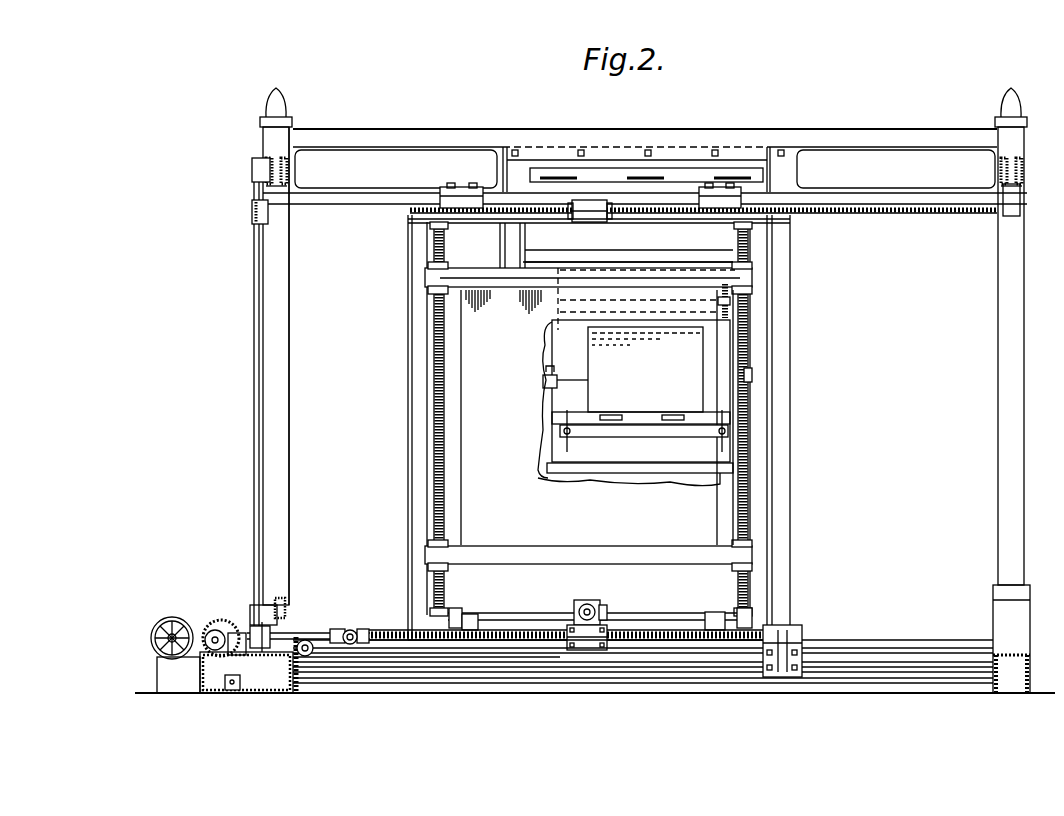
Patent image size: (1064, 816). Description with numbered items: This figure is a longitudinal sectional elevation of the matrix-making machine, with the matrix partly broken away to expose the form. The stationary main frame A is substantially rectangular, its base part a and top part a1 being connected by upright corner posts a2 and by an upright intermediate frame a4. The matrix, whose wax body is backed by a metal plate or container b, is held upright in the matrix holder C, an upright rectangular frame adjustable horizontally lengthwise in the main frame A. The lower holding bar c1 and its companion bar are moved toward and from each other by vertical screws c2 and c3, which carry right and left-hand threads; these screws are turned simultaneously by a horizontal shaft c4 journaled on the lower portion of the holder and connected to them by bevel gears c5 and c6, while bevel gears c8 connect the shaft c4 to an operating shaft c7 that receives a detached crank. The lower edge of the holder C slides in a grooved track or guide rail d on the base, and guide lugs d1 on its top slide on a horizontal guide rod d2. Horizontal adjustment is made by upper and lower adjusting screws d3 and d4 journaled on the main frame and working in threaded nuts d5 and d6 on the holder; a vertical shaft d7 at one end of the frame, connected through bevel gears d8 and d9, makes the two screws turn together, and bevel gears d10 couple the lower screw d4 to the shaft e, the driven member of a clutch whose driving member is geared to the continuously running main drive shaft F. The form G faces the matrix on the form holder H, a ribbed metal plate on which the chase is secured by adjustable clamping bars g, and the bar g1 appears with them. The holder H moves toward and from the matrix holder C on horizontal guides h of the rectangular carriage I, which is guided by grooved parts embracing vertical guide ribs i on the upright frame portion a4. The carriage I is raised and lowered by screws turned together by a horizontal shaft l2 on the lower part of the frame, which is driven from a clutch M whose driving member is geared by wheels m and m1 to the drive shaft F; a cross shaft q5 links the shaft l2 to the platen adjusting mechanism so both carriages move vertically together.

The top part a1 is at (900, 137).
The upright corner posts a2 is at (280, 338).
The upright intermediate rear frame a4 is at (507, 247).
The base part a is at (912, 677).
The stationary main frame A is at (283, 433).
The matrix holder C is at (408, 439).
The lower adjustable holding bar c1 is at (646, 560).
The vertical screw c2 is at (441, 401).
The vertical screw c3 is at (740, 600).
The horizontal shaft c4 is at (545, 603).
The bevel gears c5 is at (462, 616).
The bevel gears c6 is at (453, 608).
The operating shaft c7 is at (597, 612).
The bevel gears c8 is at (586, 605).
The grooved track or guide rail d is at (722, 665).
The guide lugs d1 is at (466, 197).
The horizontal guide rod d2 is at (896, 201).
The upper horizontal adjusting screw d3 is at (351, 208).
The lower horizontal adjusting screw d4 is at (397, 620).
The threaded nut d5 is at (591, 222).
The threaded nut d6 is at (589, 652).
The vertical shaft d7 is at (253, 436).
The bevel gears d8 is at (253, 219).
The bevel gears d9 is at (254, 650).
The bevel gears d10 is at (236, 633).
The clutch shaft e is at (204, 628).
The main drive shaft F is at (151, 637).
The adjustable clamping bars g is at (727, 320).
The clamping bar g1 is at (663, 433).
The form G is at (645, 369).
The horizontal guides h is at (543, 388).
The form holder H is at (636, 391).
The vertical guide ribs i is at (521, 231).
The carriage I is at (562, 475).
The metal plate or container b is at (598, 406).
The horizontal shaft l2 is at (380, 654).
The gear wheel m is at (213, 630).
The bearing base m1 is at (157, 652).
The clutch M is at (186, 660).
The cross shaft q5 is at (307, 640).